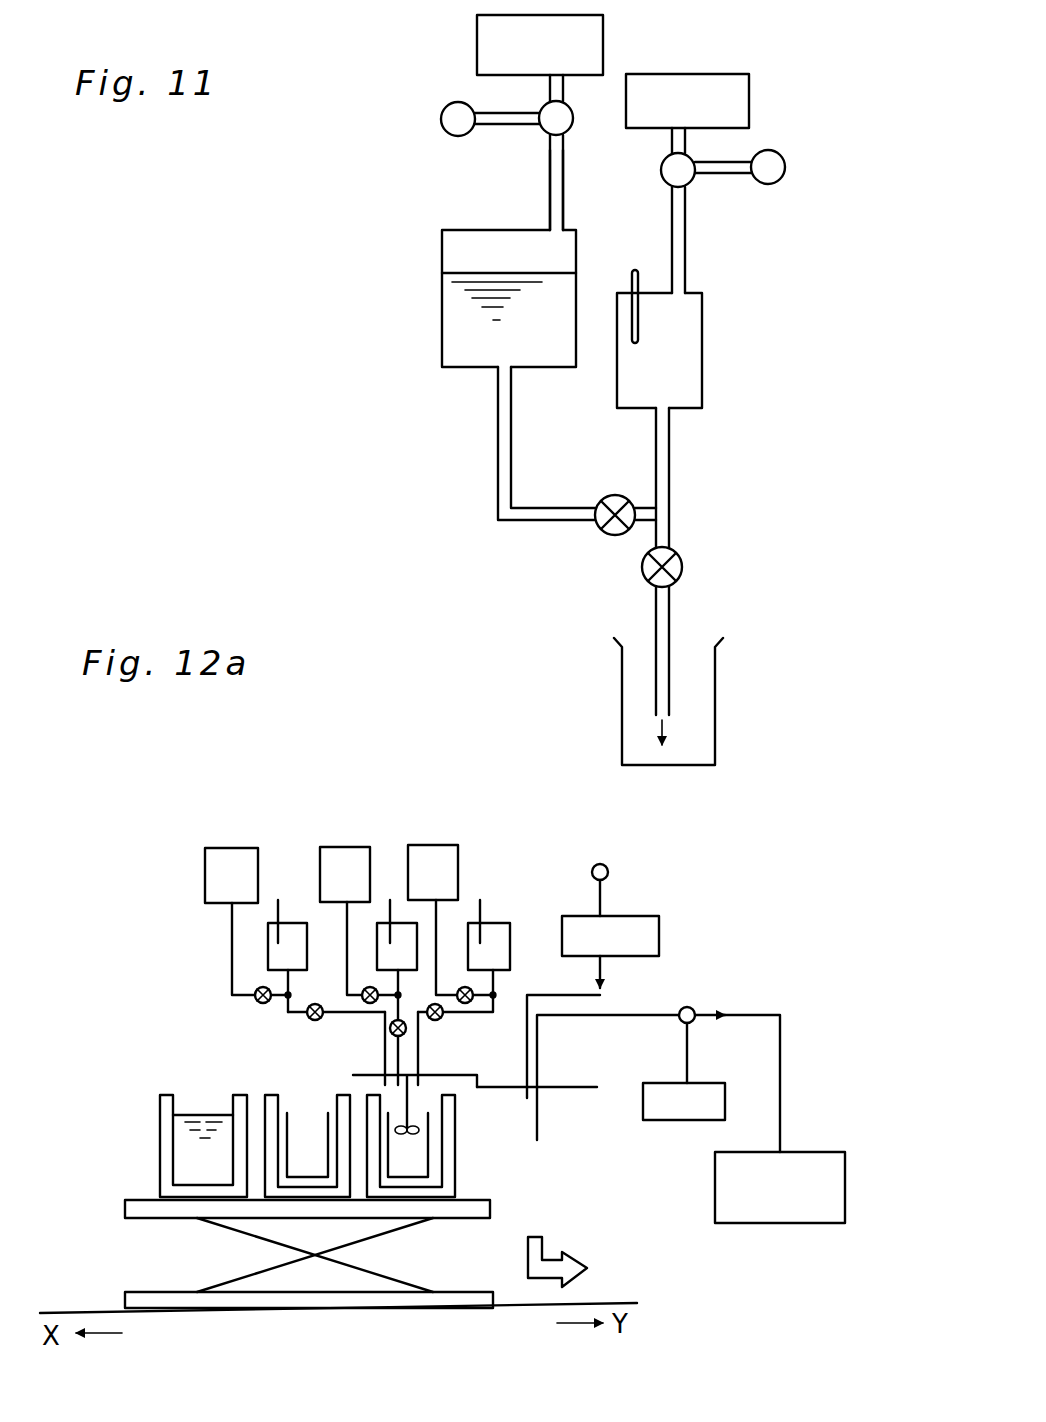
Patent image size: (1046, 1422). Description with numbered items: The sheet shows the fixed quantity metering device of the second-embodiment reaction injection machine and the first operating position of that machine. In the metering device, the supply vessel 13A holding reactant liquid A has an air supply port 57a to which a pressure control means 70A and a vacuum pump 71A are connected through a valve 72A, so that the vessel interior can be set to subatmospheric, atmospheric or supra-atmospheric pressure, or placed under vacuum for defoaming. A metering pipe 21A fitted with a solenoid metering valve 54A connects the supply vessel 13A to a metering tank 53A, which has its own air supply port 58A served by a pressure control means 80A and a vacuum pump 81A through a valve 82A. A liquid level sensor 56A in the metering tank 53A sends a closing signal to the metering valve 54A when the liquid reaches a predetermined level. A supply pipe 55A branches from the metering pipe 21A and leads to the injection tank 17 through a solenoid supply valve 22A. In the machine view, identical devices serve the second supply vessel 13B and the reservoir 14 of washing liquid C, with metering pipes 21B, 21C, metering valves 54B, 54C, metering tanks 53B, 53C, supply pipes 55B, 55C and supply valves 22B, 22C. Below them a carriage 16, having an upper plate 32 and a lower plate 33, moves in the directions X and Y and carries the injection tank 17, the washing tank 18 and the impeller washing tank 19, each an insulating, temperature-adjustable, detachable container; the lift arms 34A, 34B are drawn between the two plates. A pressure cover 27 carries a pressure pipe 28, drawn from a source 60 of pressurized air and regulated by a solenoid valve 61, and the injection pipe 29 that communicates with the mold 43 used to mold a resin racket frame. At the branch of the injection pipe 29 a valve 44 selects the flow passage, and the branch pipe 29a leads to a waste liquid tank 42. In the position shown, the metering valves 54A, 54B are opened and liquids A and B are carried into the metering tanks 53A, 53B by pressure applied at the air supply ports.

In FIG. 11, the pressure control means 70A is at (477, 40).
In FIG. 11, the vacuum pump 71A is at (441, 118).
In FIG. 11, the valve 72A is at (573, 118).
In FIG. 11, the air supply port 57a is at (550, 205).
In FIG. 11, the supply vessel 13A is at (442, 262).
In FIG. 12a, the supply vessel 13A is at (210, 850).
In FIG. 12a, the supply vessel 13B is at (340, 847).
In FIG. 12a, the reservoir 14 is at (436, 845).
In FIG. 11, the metering pipe 21A is at (498, 410).
In FIG. 12a, the metering pipe 21A is at (232, 945).
In FIG. 12a, the metering pipe 21B is at (345, 930).
In FIG. 12a, the metering pipe 21C is at (436, 930).
In FIG. 11, the metering valve 54A is at (601, 500).
In FIG. 12a, the metering valve 54A is at (257, 1000).
In FIG. 12a, the metering valve 54B is at (363, 991).
In FIG. 12a, the metering valve 54C is at (471, 990).
In FIG. 11, the pressure control means 80A is at (749, 78).
In FIG. 11, the vacuum pump 81A is at (781, 178).
In FIG. 11, the valve 82A is at (693, 163).
In FIG. 11, the air supply port 58A is at (685, 272).
In FIG. 11, the liquid level sensor 56A is at (636, 268).
In FIG. 11, the metering tank 53A is at (702, 380).
In FIG. 12a, the metering tank 53A is at (290, 923).
In FIG. 12a, the metering tank 53B is at (400, 923).
In FIG. 12a, the metering tank 53C is at (495, 923).
In FIG. 11, the supply valve 22A is at (682, 557).
In FIG. 12a, the supply valve 22A is at (308, 1017).
In FIG. 12a, the supply valve 22B is at (408, 1030).
In FIG. 12a, the supply valve 22C is at (445, 1012).
In FIG. 11, the supply pipe 55A is at (656, 618).
In FIG. 12a, the supply pipe 55A is at (385, 1027).
In FIG. 12a, the supply pipe 55B is at (400, 1057).
In FIG. 12a, the supply pipe 55C is at (418, 1052).
In FIG. 11, the injection tank 17 is at (715, 700).
In FIG. 12a, the injection tank 17 is at (455, 1172).
In FIG. 12a, the washing tank 18 is at (275, 1097).
In FIG. 12a, the impeller washing tank 19 is at (170, 1145).
In FIG. 12a, the source of pressurized air 60 is at (606, 866).
In FIG. 12a, the solenoid valve 61 is at (659, 922).
In FIG. 12a, the pressure pipe 28 is at (605, 968).
In FIG. 12a, the valve 44 is at (690, 1007).
In FIG. 12a, the injection pipe 29 is at (762, 1013).
In FIG. 12a, the branch pipe 29a is at (690, 1050).
In FIG. 12a, the waste liquid tank 42 is at (680, 1122).
In FIG. 12a, the mold 43 is at (802, 1223).
In FIG. 12a, the pressure cover 27 is at (567, 1087).
In FIG. 12a, the upper plate 32 is at (490, 1207).
In FIG. 12a, the lower plate 33 is at (165, 1308).
In FIG. 12a, the lift arm 34A is at (277, 1270).
In FIG. 12a, the lift arm 34B is at (385, 1278).
In FIG. 12a, the carriage 16 is at (452, 1252).